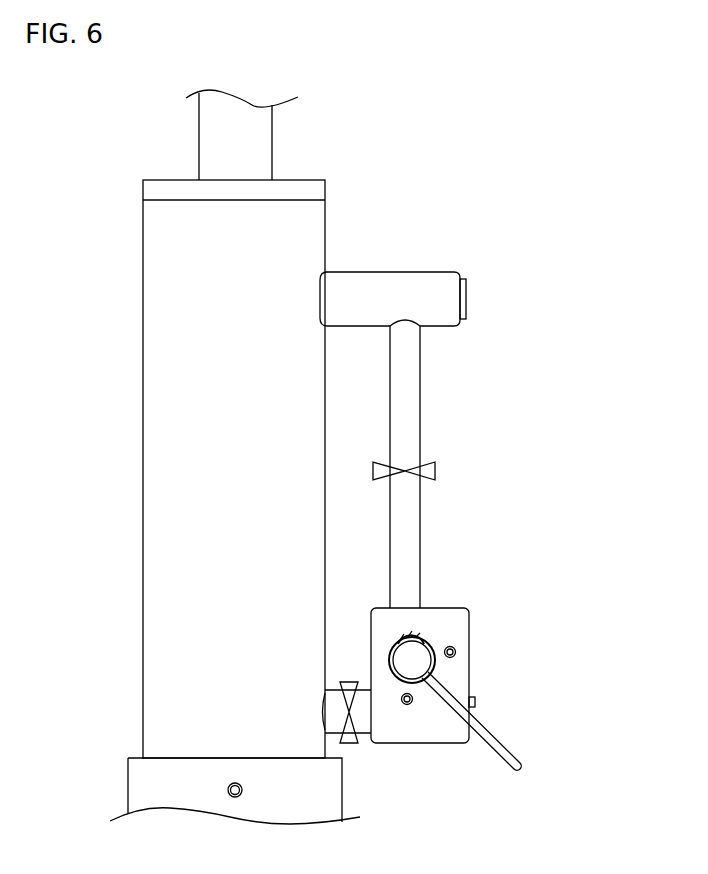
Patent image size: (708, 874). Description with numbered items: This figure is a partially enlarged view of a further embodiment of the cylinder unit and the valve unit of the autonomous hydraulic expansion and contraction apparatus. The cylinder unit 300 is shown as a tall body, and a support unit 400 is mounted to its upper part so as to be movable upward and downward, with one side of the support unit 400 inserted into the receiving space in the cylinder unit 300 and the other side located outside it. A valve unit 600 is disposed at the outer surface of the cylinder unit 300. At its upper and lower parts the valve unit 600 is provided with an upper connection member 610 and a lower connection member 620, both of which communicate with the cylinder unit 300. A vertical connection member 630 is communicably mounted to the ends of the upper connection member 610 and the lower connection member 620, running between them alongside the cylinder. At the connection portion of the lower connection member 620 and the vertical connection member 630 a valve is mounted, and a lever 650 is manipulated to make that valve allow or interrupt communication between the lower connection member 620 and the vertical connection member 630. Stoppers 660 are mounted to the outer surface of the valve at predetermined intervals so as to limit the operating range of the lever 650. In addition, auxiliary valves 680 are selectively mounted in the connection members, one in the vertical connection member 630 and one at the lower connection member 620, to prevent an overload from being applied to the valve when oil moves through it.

The cylinder unit 300 is at (153, 443).
The support unit 400 is at (206, 133).
The valve unit 600 is at (478, 581).
The upper connection member 610 is at (370, 282).
The lower connection member 620 is at (333, 690).
The vertical connection member 630 is at (416, 405).
The lever 650 is at (525, 758).
The stopper 660 is at (456, 650).
The auxiliary valve 680 is at (435, 464).